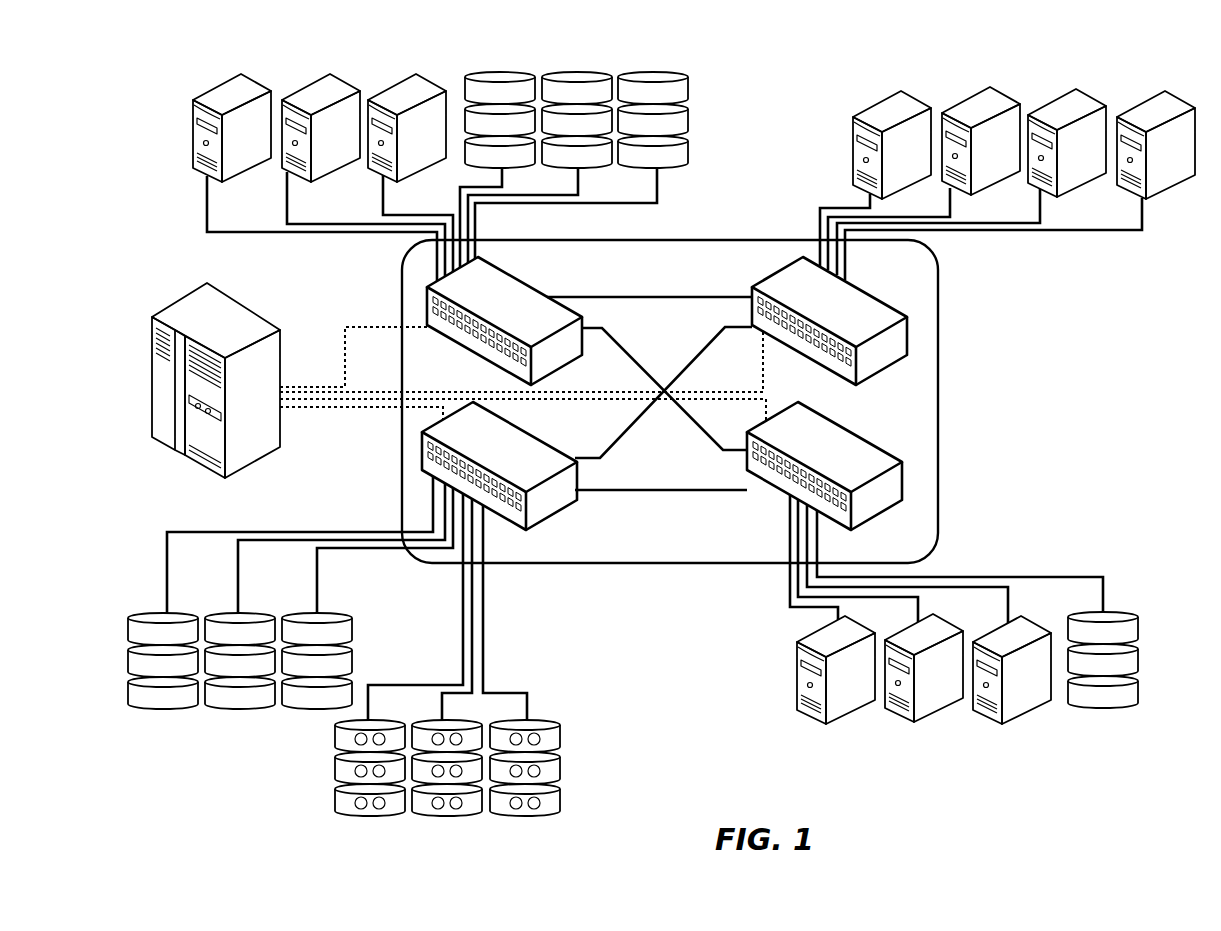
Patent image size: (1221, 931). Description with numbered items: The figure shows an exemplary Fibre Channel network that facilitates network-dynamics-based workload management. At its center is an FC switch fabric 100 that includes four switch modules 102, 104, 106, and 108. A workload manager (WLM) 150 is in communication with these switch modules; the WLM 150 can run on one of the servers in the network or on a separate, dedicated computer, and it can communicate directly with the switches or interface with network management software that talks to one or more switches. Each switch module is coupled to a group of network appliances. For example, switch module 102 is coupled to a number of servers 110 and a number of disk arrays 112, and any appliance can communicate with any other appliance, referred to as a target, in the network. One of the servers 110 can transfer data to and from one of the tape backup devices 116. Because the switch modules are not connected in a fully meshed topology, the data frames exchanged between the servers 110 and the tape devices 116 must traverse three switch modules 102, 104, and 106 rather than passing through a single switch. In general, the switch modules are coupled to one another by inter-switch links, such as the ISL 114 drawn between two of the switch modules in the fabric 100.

The FC switch fabric 100 is at (670, 402).
The switch module 102 is at (504, 321).
The switch module 104 is at (829, 321).
The switch module 106 is at (499, 466).
The switch module 108 is at (824, 466).
The servers 110 is at (202, 75).
The disk arrays 112 is at (458, 75).
The inter-switch link 114 is at (628, 297).
The tape backup devices 116 is at (327, 803).
The workload manager (WLM) 150 is at (282, 363).